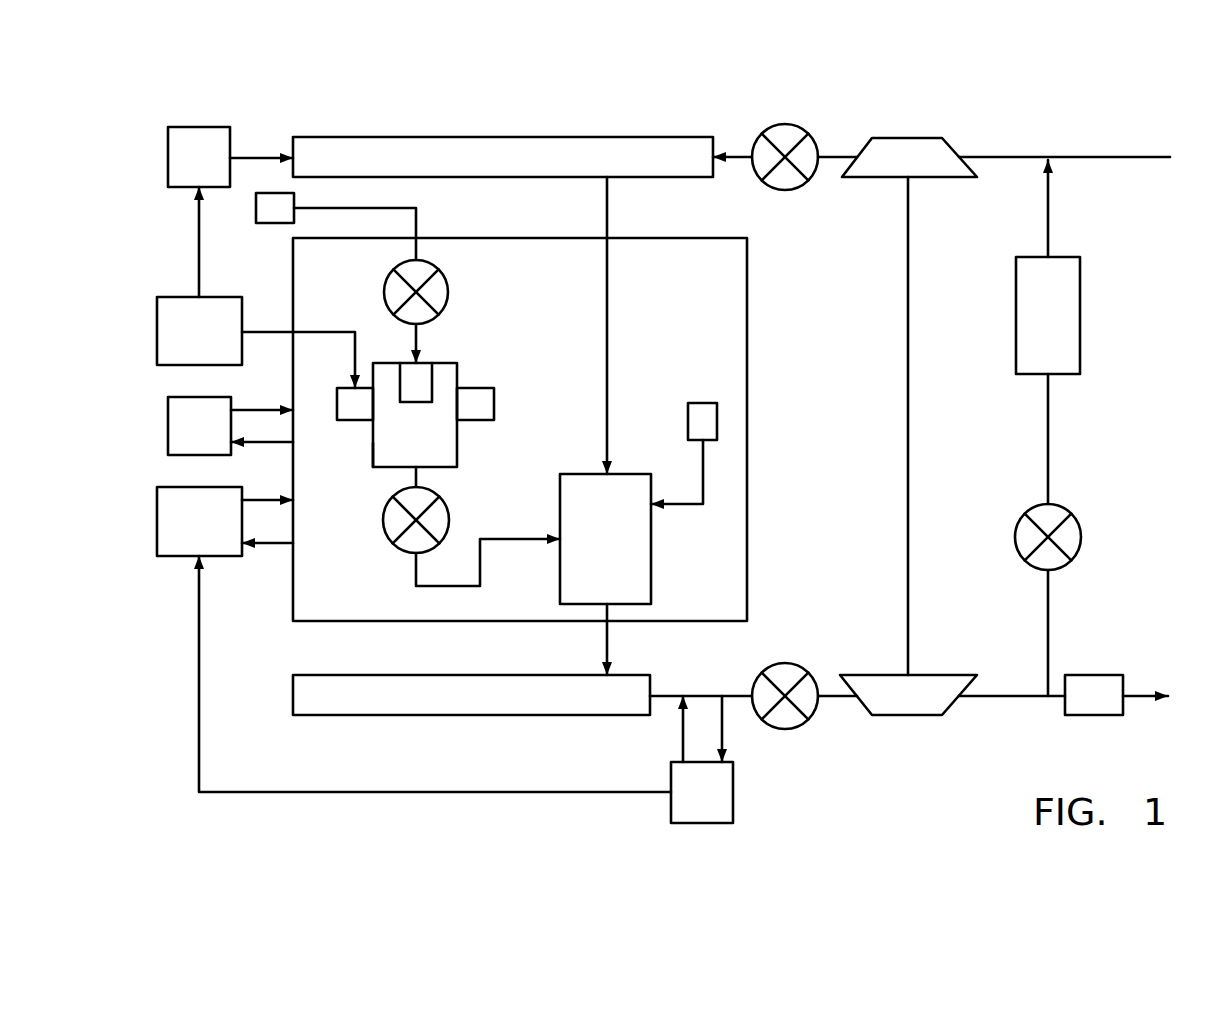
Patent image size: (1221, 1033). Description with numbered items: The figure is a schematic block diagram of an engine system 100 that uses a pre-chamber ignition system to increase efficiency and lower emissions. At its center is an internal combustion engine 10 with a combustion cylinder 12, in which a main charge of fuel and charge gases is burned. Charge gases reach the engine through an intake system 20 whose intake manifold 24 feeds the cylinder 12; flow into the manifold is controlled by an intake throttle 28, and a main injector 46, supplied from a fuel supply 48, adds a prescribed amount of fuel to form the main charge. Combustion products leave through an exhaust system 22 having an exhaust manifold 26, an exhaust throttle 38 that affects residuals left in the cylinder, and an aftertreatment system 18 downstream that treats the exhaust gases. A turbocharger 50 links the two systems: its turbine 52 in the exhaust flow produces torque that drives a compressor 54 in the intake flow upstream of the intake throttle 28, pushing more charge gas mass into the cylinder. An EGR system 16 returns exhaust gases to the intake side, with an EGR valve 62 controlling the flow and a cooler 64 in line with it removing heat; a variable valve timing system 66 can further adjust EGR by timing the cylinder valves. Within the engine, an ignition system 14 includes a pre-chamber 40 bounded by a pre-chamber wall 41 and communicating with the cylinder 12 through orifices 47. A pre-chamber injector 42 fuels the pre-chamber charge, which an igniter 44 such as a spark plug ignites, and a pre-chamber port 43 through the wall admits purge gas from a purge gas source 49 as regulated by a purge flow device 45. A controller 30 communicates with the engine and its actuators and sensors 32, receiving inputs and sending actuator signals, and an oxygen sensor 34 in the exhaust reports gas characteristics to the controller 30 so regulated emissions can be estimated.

The engine system 100 is at (1080, 132).
The internal combustion engine 10 is at (747, 430).
The combustion cylinder 12 is at (651, 539).
The ignition system 14 is at (497, 340).
The EGR system 16 is at (1075, 435).
The aftertreatment system 18 is at (1110, 715).
The intake system 20 is at (742, 130).
The exhaust system 22 is at (743, 722).
The intake manifold 24 is at (610, 137).
The exhaust manifold 26 is at (293, 695).
The intake throttle 28 is at (798, 125).
The controller 30 is at (175, 556).
The sensors 32 is at (168, 421).
The oxygen sensor 34 is at (733, 792).
The exhaust throttle 38 is at (786, 664).
The pre-chamber 40 is at (442, 363).
The pre-chamber wall 41 is at (390, 463).
The pre-chamber injector 42 is at (337, 403).
The pre-chamber port 43 is at (412, 377).
The igniter 44 is at (477, 388).
The purge flow device 45 is at (416, 260).
The main injector 46 is at (198, 127).
The orifices 47 is at (382, 537).
The fuel supply 48 is at (182, 297).
The purge gas source 49 is at (275, 223).
The turbocharger 50 is at (897, 337).
The turbine 52 is at (920, 716).
The compressor 54 is at (908, 138).
The EGR valve 62 is at (1082, 543).
The cooler 64 is at (1080, 287).
The variable valve timing system 66 is at (718, 418).